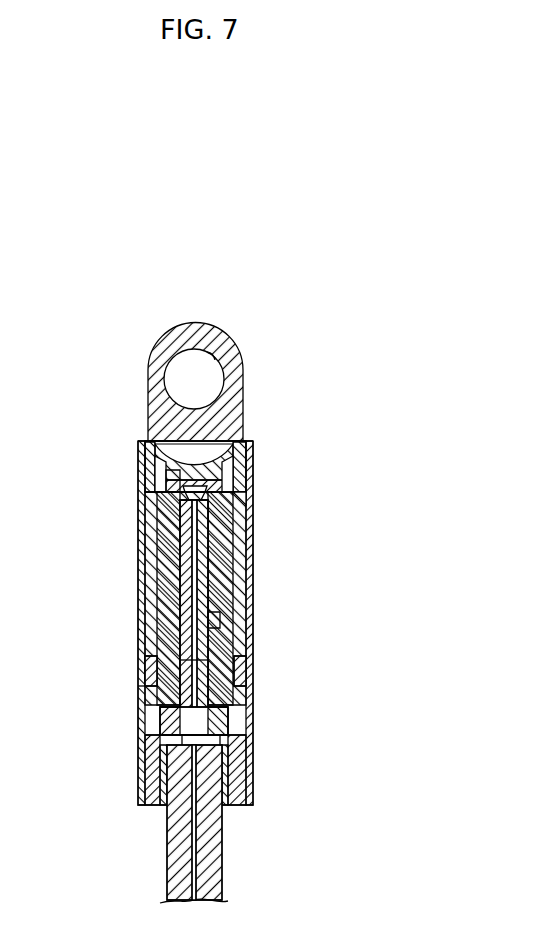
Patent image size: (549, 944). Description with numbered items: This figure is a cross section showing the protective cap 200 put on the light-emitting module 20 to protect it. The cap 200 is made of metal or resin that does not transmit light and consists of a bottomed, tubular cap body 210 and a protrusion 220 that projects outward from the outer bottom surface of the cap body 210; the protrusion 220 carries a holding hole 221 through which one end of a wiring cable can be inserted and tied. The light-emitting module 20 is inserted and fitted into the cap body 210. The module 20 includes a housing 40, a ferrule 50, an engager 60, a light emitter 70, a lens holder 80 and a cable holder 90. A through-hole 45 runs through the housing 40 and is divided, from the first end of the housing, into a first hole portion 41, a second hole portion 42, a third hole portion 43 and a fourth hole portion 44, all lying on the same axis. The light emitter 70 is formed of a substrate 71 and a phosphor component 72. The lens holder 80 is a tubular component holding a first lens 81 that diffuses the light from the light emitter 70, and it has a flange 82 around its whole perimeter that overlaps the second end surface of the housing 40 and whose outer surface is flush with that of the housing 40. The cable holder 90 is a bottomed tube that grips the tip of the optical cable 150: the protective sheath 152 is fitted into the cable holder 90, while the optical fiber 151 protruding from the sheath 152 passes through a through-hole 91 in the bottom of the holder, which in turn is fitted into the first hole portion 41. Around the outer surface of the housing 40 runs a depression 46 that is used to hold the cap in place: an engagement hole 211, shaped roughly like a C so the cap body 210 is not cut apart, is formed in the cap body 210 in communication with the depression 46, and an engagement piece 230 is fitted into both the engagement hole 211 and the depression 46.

The light-emitting module 20 is at (246, 828).
The housing 40 is at (150, 632).
The first hole portion 41 is at (228, 712).
The second hole portion 42 is at (200, 643).
The third hole portion 43 is at (250, 521).
The fourth hole portion 44 is at (176, 481).
The through-hole 45 is at (214, 621).
The depression 46 is at (206, 659).
The ferrule 50 is at (165, 540).
The engager 60 is at (148, 668).
The light emitter 70 is at (158, 470).
The substrate 71 is at (212, 493).
The phosphor component 72 is at (215, 484).
The lens holder 80 is at (136, 440).
The first lens 81 is at (246, 446).
The flange 82 is at (228, 462).
The cable holder 90 is at (150, 780).
The through-hole 91 is at (246, 752).
The optical cable 150 is at (238, 884).
The optical fiber 151 is at (222, 740).
The protective sheath 152 is at (168, 843).
The protective cap 200 is at (122, 590).
The cap body 210 is at (248, 570).
The engagement hole 211 is at (138, 688).
The protrusion 220 is at (232, 380).
The holding hole 221 is at (214, 355).
The engagement piece 230 is at (246, 686).